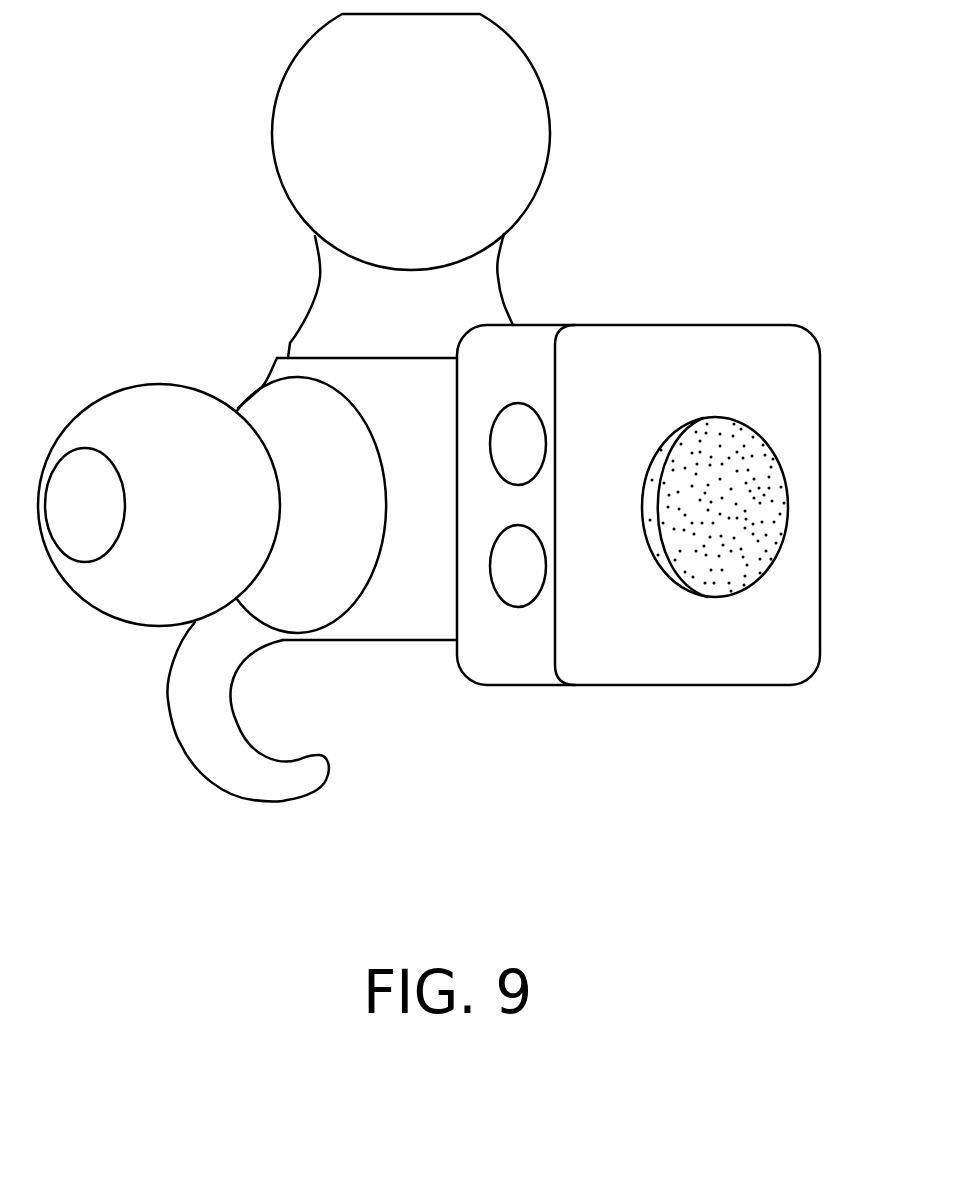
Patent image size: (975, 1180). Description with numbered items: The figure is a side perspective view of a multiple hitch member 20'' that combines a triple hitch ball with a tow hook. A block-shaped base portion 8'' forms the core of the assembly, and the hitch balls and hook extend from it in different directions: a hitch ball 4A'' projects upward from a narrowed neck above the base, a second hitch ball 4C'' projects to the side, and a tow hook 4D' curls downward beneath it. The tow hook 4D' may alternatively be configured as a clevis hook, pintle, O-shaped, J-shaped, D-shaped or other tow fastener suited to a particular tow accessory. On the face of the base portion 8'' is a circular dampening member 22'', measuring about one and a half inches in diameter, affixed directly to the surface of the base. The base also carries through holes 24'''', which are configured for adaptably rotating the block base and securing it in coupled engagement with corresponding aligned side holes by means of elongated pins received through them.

The hitch ball 4A'' is at (426, 138).
The multiple hitch member 20'' is at (482, 333).
The dampening member 22'' is at (773, 499).
The base portion 8'' is at (675, 505).
The through holes 24'''' is at (457, 565).
The hitch ball 4C'' is at (159, 524).
The tow hook 4D' is at (218, 712).